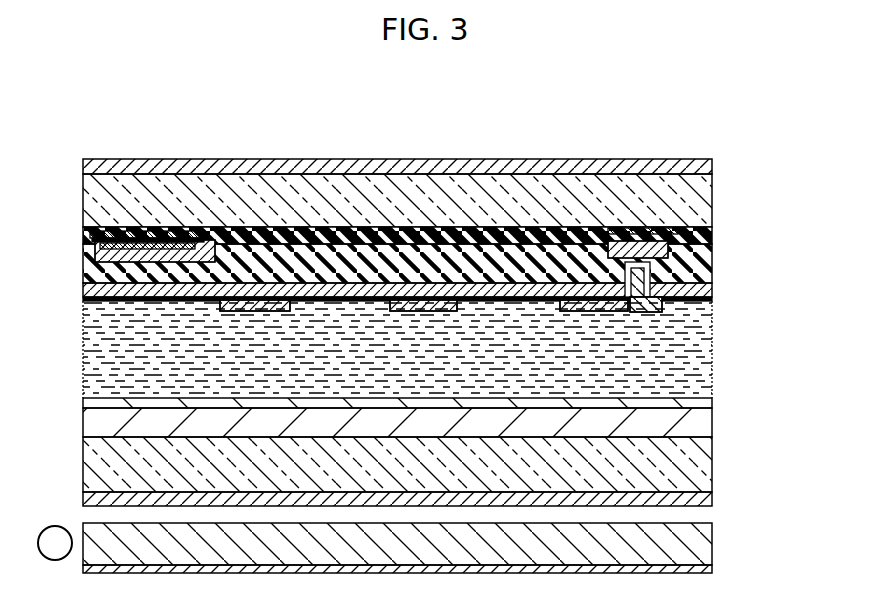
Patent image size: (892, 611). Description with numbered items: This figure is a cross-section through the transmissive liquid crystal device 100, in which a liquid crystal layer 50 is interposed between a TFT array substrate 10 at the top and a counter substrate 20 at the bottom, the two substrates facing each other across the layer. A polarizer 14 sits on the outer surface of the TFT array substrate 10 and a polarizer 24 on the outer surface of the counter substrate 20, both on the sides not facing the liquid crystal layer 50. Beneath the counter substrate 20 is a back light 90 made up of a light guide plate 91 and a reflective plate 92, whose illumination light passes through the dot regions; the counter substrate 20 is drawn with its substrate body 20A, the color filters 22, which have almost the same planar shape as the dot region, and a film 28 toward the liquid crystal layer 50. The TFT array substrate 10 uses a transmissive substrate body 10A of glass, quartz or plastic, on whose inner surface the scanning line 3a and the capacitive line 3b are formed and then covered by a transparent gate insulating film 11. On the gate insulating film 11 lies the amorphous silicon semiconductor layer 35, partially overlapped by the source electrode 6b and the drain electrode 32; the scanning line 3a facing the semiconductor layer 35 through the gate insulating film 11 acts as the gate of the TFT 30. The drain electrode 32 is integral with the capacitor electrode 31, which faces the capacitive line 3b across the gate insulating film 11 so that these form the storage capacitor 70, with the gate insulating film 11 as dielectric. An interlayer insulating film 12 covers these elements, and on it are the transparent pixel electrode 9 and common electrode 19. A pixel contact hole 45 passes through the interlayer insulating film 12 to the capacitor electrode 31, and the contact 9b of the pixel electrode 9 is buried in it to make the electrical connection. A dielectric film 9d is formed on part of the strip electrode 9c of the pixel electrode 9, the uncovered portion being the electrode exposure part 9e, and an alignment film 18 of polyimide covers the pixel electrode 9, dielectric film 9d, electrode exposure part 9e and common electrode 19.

In FIG. 3, the liquid crystal device 100 is at (744, 146).
In FIG. 3, the TFT array substrate 10 is at (447, 244).
In FIG. 3, the polarizer 14 is at (712, 166).
In FIG. 3, the substrate body 10A is at (712, 200).
In FIG. 3, the gate insulating film 11 is at (712, 231).
In FIG. 3, the capacitor electrode 31 is at (700, 270).
In FIG. 3, the interlayer insulating film 12 is at (712, 290).
In FIG. 3, the alignment film 18 is at (712, 300).
In FIG. 3, the drain electrode 32 is at (210, 258).
In FIG. 3, the source electrode 6b is at (125, 233).
In FIG. 3, the scanning line 3a is at (185, 250).
In FIG. 3, the semiconductor layer 35 is at (160, 245).
In FIG. 3, the storage capacitor 70 is at (709, 256).
In FIG. 3, the capacitive line 3b is at (668, 250).
In FIG. 3, the pixel contact hole 45 is at (648, 298).
In FIG. 3, the pixel electrode 9 is at (441, 253).
In FIG. 3, the electrode exposure part 9e is at (364, 297).
In FIG. 3, the dielectric film 9d is at (258, 312).
In FIG. 3, the strip electrode 9c is at (335, 303).
In FIG. 3, the contact 9b is at (618, 312).
In FIG. 3, the common electrode 19 is at (167, 298).
The liquid crystal layer 50 is at (712, 352).
The TFT 30 is at (88, 303).
The counter substrate 20 is at (408, 444).
The alignment film 28 is at (712, 403).
The color filter 22 is at (712, 420).
The substrate body 20A is at (712, 465).
The polarizer 24 is at (712, 499).
The back light 90 is at (447, 551).
The light guide plate 91 is at (712, 545).
The reflective plate 92 is at (712, 569).